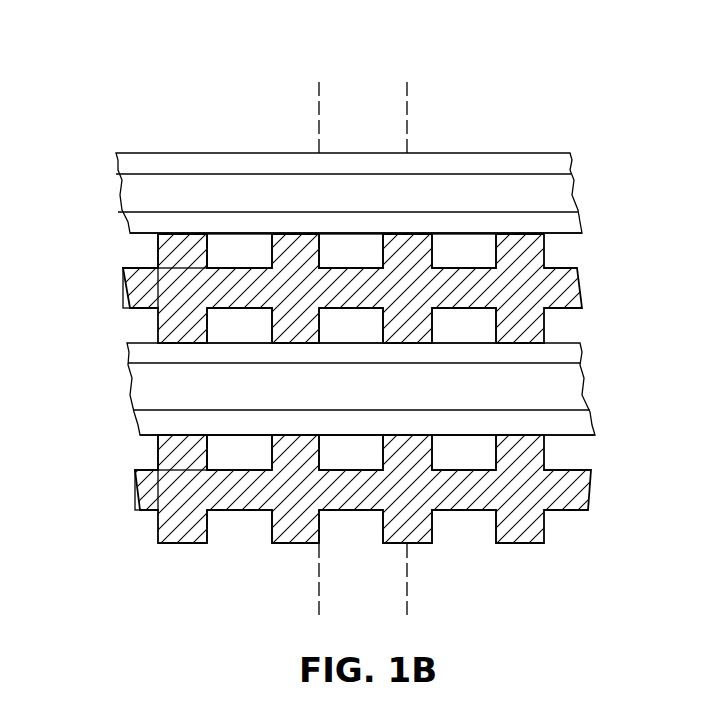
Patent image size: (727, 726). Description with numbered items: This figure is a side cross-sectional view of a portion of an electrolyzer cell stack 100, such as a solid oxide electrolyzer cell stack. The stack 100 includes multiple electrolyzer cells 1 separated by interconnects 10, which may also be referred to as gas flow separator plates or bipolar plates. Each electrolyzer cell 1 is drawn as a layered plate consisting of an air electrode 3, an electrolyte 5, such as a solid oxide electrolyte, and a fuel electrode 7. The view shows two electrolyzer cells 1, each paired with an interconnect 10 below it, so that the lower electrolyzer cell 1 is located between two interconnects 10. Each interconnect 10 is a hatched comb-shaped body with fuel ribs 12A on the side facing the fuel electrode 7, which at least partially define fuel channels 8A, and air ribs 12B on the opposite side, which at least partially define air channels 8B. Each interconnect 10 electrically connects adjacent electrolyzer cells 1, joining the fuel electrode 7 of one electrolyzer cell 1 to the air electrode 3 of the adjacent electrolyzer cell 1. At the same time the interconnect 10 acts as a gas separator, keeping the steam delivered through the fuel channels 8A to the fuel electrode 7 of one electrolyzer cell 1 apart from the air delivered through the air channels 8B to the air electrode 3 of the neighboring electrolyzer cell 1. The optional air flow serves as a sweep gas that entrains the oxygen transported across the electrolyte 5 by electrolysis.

The electrolyzer cell stack 100 is at (234, 94).
The electrolyzer cell 1 is at (600, 152).
The air electrode 3 is at (116, 165).
The electrolyte 5 is at (120, 199).
The fuel electrode 7 is at (130, 226).
The interconnect 10 is at (600, 248).
The fuel rib 12A is at (158, 257).
The air rib 12B is at (158, 324).
The fuel channel 8A is at (351, 352).
The air channel 8B is at (351, 425).